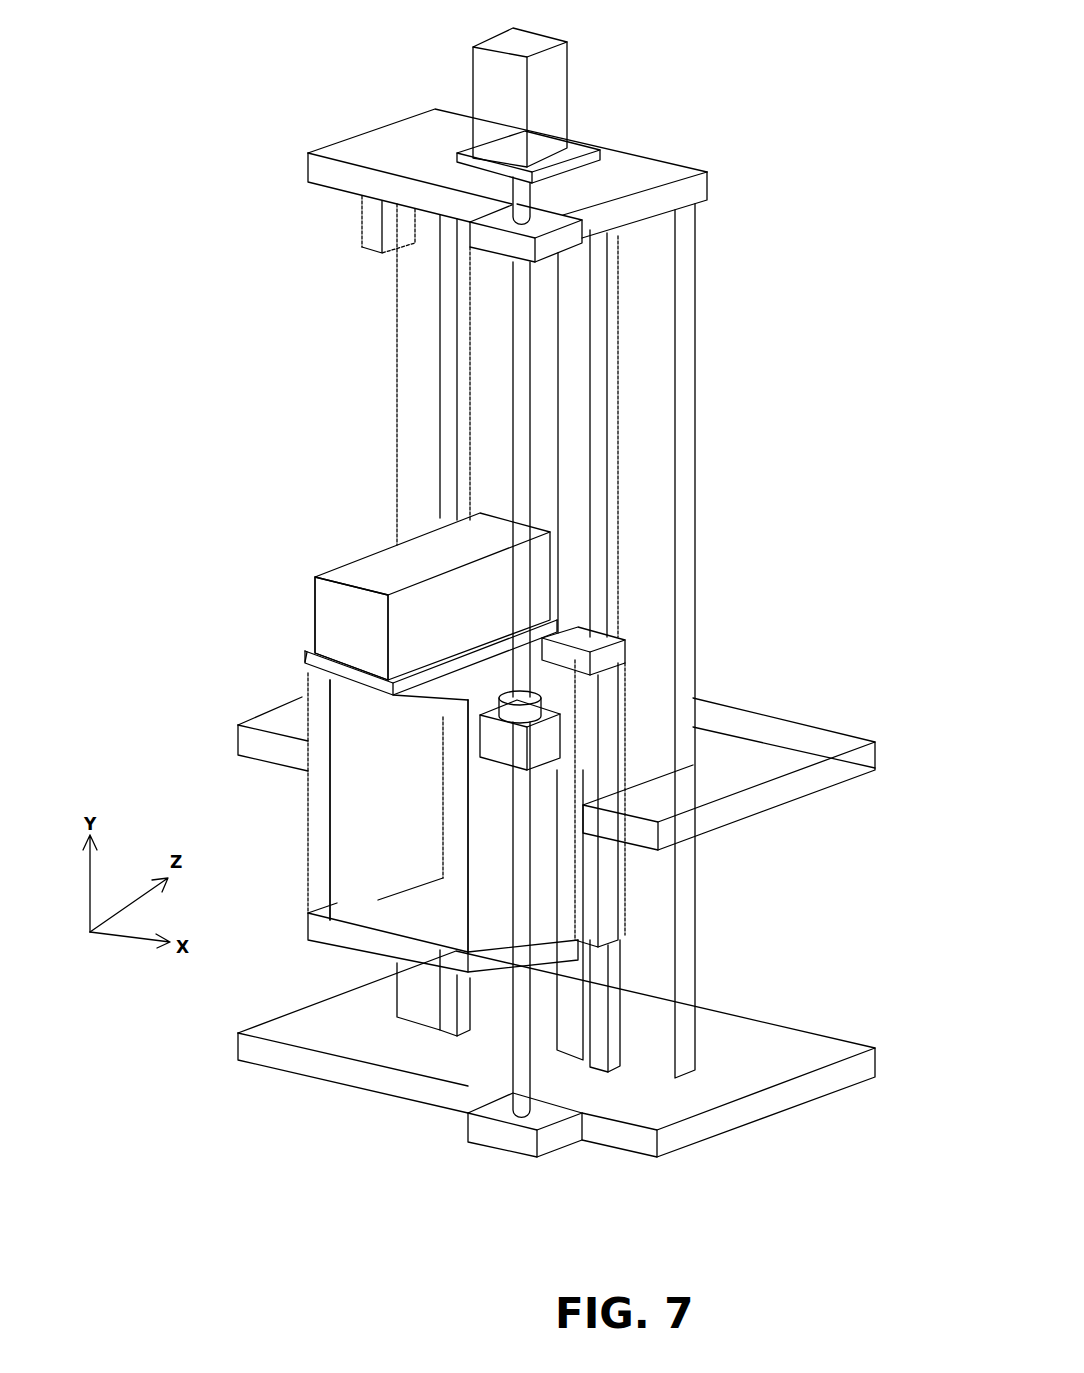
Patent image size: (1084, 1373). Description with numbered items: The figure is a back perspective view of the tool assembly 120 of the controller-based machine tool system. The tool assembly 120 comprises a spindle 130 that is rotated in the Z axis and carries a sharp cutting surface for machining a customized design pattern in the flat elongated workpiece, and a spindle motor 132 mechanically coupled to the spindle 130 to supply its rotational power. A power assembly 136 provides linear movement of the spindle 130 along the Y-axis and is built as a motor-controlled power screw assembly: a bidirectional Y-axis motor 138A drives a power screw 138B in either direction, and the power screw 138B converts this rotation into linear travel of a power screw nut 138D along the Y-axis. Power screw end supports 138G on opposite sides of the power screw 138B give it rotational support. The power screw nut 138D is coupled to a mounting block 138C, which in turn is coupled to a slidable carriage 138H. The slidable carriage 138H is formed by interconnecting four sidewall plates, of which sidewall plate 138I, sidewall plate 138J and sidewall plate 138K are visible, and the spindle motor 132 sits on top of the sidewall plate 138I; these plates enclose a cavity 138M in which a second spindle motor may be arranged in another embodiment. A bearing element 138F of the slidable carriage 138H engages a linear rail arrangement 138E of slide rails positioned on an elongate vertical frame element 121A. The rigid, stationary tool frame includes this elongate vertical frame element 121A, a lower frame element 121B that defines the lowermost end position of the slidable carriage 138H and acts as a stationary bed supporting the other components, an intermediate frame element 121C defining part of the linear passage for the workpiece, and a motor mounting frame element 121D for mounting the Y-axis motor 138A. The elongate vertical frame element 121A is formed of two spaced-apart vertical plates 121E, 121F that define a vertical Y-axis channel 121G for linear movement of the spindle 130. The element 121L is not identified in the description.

The tool assembly 120 is at (752, 106).
The elongate vertical frame element 121A is at (650, 493).
The lower frame element 121B is at (738, 1041).
The intermediate frame element 121C is at (738, 746).
The motor mounting frame element 121D is at (392, 149).
The vertical plate 121E is at (665, 459).
The vertical plate 121F is at (418, 332).
The vertical Y-axis channel 121G is at (548, 384).
The guide post 121L is at (457, 870).
The spindle 130 is at (555, 576).
The spindle motor 132 is at (395, 578).
The power assembly 136 is at (556, 78).
The Y-axis motor 138A is at (478, 74).
The power screw 138B is at (526, 441).
The mounting block 138C is at (496, 738).
The power screw nut 138D is at (522, 707).
The linear rail arrangement 138E is at (452, 386).
The bearing element 138F is at (548, 640).
The power screw end supports 138G is at (548, 248).
The slidable carriage 138H is at (398, 834).
The sidewall plate 138I is at (436, 690).
The sidewall plate 138J is at (320, 880).
The sidewall plate 138K is at (376, 956).
The cavity 138M is at (440, 803).